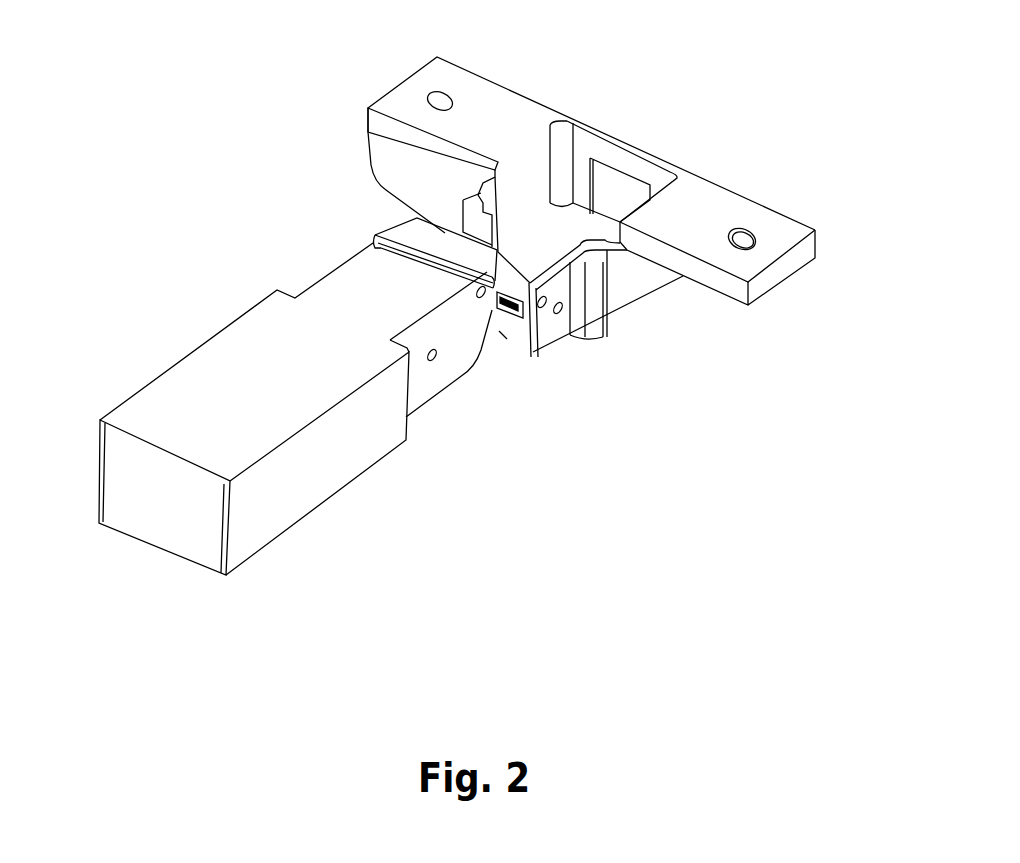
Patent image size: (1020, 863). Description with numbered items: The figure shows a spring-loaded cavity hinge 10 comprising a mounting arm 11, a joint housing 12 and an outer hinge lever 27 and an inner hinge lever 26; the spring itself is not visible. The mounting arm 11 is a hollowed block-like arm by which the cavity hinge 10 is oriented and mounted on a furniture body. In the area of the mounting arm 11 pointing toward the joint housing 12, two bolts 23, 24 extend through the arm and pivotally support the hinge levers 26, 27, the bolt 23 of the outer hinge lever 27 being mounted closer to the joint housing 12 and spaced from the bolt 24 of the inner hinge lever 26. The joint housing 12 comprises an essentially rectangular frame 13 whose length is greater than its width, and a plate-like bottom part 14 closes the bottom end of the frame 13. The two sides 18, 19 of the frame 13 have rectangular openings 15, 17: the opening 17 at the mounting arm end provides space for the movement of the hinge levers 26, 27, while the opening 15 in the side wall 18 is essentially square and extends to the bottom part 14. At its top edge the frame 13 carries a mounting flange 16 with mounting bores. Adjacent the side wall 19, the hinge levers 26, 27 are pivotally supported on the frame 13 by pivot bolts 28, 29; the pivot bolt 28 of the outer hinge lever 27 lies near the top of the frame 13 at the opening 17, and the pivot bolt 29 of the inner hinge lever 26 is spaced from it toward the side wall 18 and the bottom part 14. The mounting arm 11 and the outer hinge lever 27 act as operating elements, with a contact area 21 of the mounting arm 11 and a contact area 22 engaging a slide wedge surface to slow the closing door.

The cavity hinge 10 is at (121, 553).
The mounting arm 11 is at (200, 510).
The joint housing 12 is at (648, 318).
The frame 13 is at (622, 297).
The bottom part 14 is at (549, 228).
The opening 15 is at (623, 190).
The mounting flange 16 is at (710, 210).
The opening 17 is at (504, 294).
The side wall 18 is at (608, 155).
The side wall 19 is at (503, 335).
The contact area 21 is at (453, 240).
The contact area 22 is at (498, 253).
The bolt 23 is at (478, 289).
The bolt 24 is at (429, 352).
The inner hinge lever 26 is at (485, 330).
The outer hinge lever 27 is at (368, 163).
The pivot bolt 28 is at (541, 310).
The pivot bolt 29 is at (558, 313).